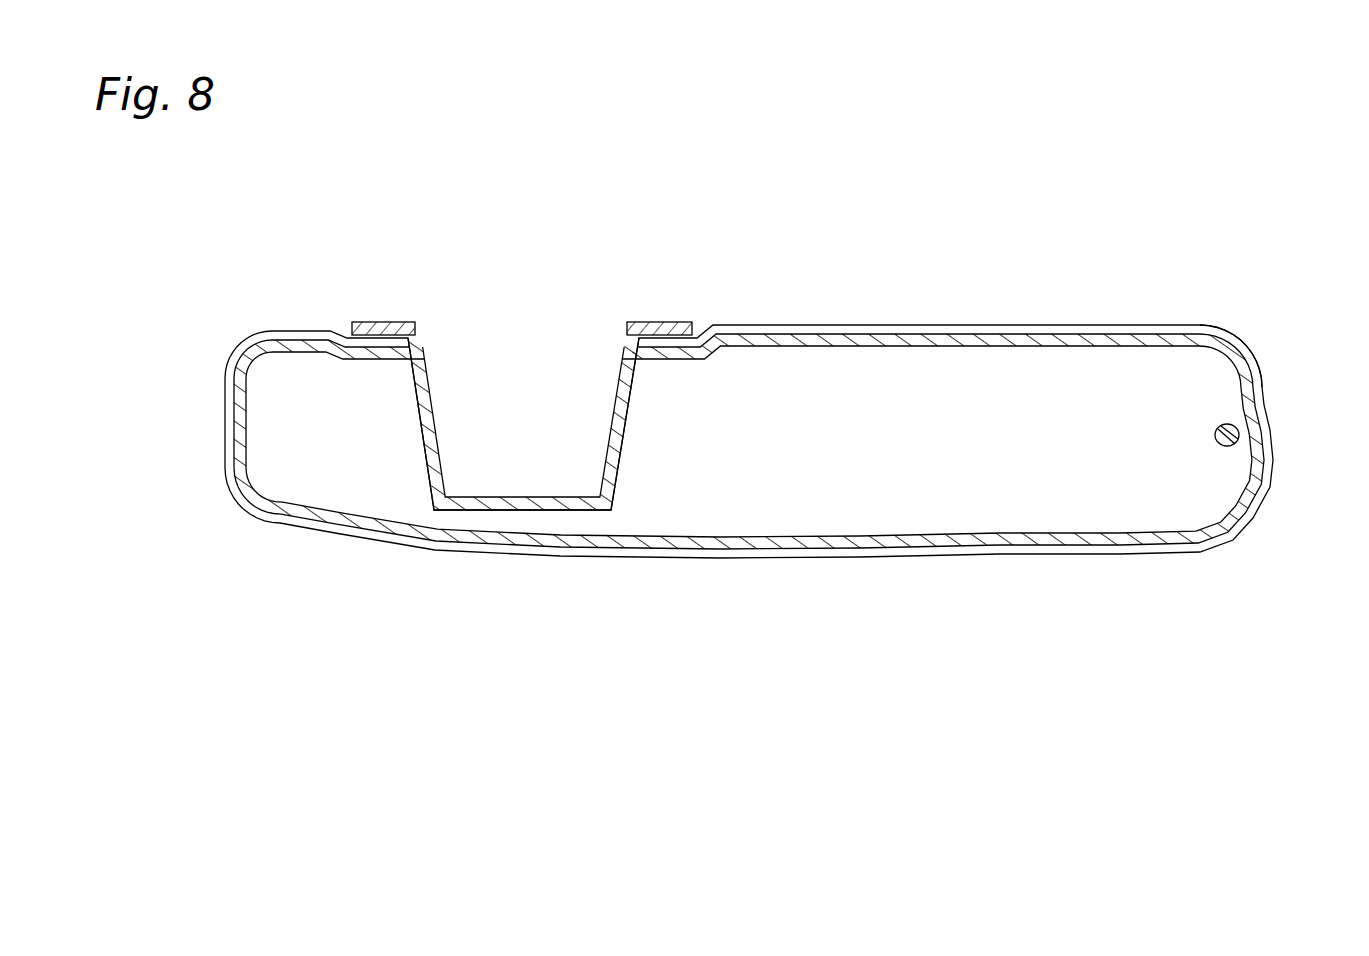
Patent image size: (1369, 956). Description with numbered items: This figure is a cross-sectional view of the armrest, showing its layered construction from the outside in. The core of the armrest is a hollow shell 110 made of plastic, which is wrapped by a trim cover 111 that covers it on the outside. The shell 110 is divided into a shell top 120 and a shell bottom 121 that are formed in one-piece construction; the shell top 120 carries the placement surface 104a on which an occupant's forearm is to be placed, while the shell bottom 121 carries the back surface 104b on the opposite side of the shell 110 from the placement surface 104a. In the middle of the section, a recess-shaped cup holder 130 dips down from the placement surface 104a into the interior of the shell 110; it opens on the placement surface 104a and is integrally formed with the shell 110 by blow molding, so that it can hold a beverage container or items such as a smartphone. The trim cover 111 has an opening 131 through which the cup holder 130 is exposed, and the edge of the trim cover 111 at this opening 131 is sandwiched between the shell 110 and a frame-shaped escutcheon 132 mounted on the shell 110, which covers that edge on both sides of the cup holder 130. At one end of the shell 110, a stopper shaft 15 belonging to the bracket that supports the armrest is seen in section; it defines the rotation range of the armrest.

The shell 110 is at (106, 374).
The shell top 120 is at (305, 331).
The shell bottom 121 is at (285, 527).
The placement surface 104a is at (866, 347).
The back surface 104b is at (850, 554).
The cup holder 130 is at (613, 377).
The opening 131 is at (398, 321).
The escutcheon 132 is at (663, 321).
The trim cover 111 is at (1210, 323).
The stopper shaft 15 is at (1243, 413).